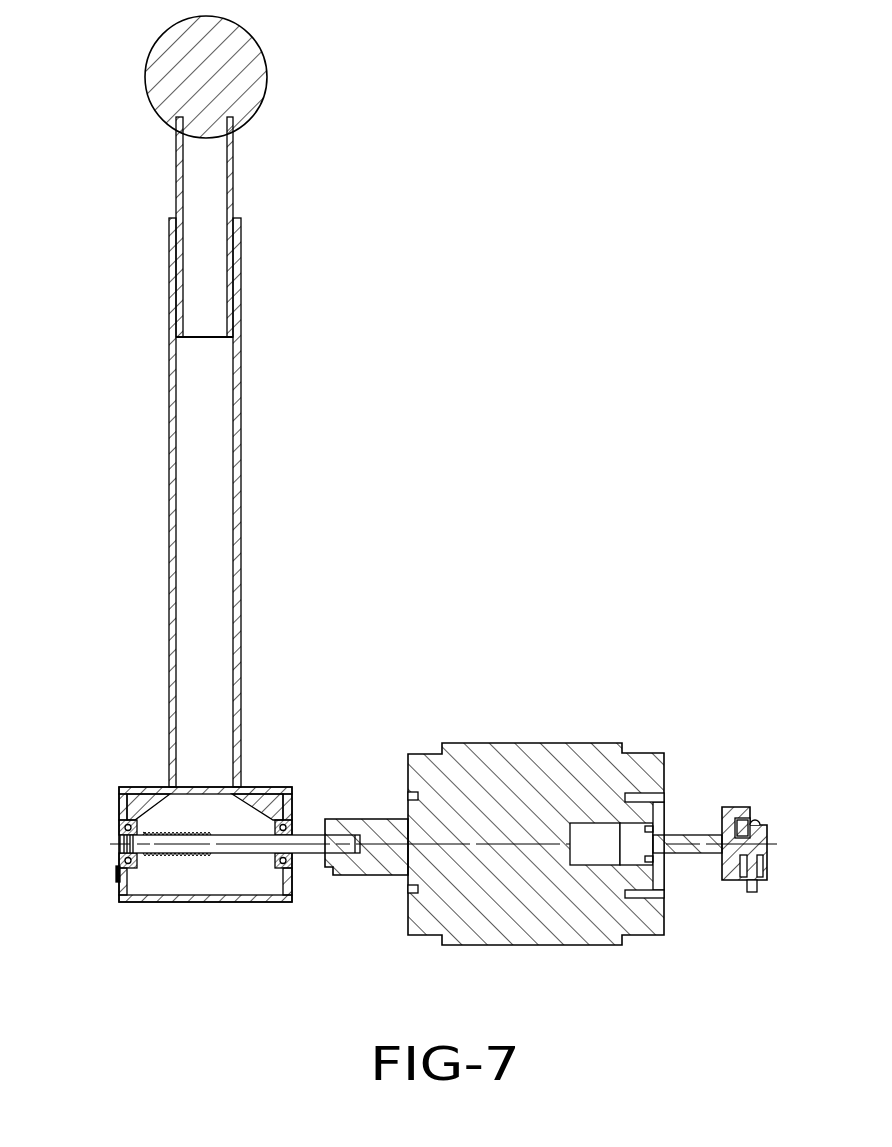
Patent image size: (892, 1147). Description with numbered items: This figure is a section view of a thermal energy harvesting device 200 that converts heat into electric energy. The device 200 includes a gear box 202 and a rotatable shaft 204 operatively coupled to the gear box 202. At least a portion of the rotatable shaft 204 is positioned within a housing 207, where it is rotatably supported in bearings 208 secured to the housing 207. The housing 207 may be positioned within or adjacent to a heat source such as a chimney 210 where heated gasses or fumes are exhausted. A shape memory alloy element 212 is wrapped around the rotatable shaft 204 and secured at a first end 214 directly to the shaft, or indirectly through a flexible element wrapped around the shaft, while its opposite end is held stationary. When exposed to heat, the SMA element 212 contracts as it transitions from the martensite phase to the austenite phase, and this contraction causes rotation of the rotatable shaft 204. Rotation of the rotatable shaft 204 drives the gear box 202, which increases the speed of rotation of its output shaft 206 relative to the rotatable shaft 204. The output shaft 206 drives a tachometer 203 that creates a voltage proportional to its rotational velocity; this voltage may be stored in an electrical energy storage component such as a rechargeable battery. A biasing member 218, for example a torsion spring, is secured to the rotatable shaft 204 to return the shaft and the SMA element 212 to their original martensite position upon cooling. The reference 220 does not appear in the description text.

The thermal energy harvesting device 200 is at (530, 368).
The gear box 202 is at (520, 742).
The tachometer 203 is at (767, 853).
The rotatable shaft 204 is at (303, 835).
The output shaft 206 is at (683, 835).
The housing 207 is at (170, 902).
The bearings 208 is at (120, 855).
The chimney 210 is at (243, 452).
The shape memory alloy element 212 is at (147, 835).
The first end 214 is at (173, 836).
The biasing member 218 is at (118, 878).
The inner tube 220 is at (233, 163).